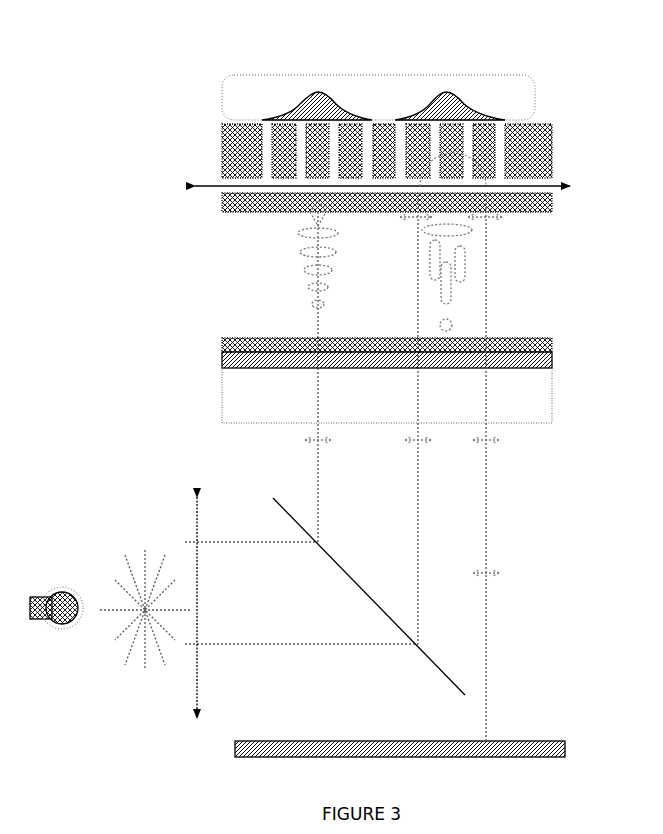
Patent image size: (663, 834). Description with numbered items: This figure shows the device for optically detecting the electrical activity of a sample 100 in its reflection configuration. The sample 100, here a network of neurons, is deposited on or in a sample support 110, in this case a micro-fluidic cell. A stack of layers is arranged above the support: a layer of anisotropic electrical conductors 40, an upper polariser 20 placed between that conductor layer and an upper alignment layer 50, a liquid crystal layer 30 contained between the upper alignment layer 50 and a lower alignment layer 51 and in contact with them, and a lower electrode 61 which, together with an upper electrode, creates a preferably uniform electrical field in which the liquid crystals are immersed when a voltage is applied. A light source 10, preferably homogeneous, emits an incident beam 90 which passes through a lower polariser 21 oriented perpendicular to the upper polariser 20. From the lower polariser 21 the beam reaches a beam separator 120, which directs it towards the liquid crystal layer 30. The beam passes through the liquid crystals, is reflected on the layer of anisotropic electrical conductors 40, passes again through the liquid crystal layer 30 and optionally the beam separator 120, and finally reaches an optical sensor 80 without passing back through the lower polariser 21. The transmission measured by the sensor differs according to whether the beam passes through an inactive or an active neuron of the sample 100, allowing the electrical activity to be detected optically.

The sample 100 is at (541, 94).
The layer of anisotropic electrical conductors 40 is at (554, 142).
The upper polariser 20 is at (562, 184).
The upper alignment layer 50 is at (557, 204).
The liquid crystal layer 30 is at (470, 268).
The lower alignment layer 51 is at (556, 344).
The lower electrode 61 is at (556, 360).
The sample support 110 is at (556, 416).
The incident beam 90 is at (492, 537).
The beam separator 120 is at (455, 660).
The optical sensor 80 is at (573, 730).
The light source 10 is at (58, 633).
The lower polariser 21 is at (194, 728).